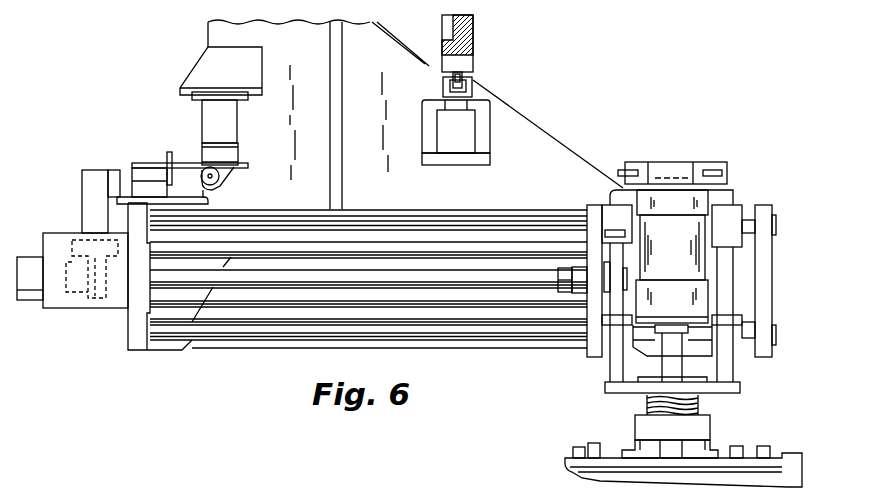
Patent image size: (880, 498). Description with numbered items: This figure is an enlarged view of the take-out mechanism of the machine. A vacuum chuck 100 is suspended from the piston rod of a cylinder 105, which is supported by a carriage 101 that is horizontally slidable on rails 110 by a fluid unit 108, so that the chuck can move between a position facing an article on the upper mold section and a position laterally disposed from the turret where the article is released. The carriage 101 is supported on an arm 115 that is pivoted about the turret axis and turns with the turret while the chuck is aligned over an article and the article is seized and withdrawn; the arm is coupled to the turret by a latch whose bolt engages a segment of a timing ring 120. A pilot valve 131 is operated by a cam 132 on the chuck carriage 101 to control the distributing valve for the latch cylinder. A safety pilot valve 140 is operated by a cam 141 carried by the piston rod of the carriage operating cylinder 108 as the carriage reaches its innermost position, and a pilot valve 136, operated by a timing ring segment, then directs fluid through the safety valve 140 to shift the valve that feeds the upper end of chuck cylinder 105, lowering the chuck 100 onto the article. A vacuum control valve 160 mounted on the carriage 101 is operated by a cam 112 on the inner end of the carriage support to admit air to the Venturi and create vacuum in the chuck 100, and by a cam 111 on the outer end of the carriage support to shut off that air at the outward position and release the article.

The vacuum chuck 100 is at (572, 463).
The carriage 101 is at (605, 385).
The cylinder 105 is at (702, 257).
The fluid unit 108 is at (277, 307).
The rails 110 is at (238, 343).
The cam 111 is at (167, 155).
The cam 112 is at (727, 170).
The arm 115 is at (208, 30).
The timing ring 120 is at (475, 42).
The pilot valve 131 is at (200, 120).
The cam 132 is at (477, 165).
The pilot valve 136 is at (475, 132).
The safety pilot valve 140 is at (82, 197).
The cam 141 is at (83, 237).
The vacuum control valve 160 is at (690, 162).